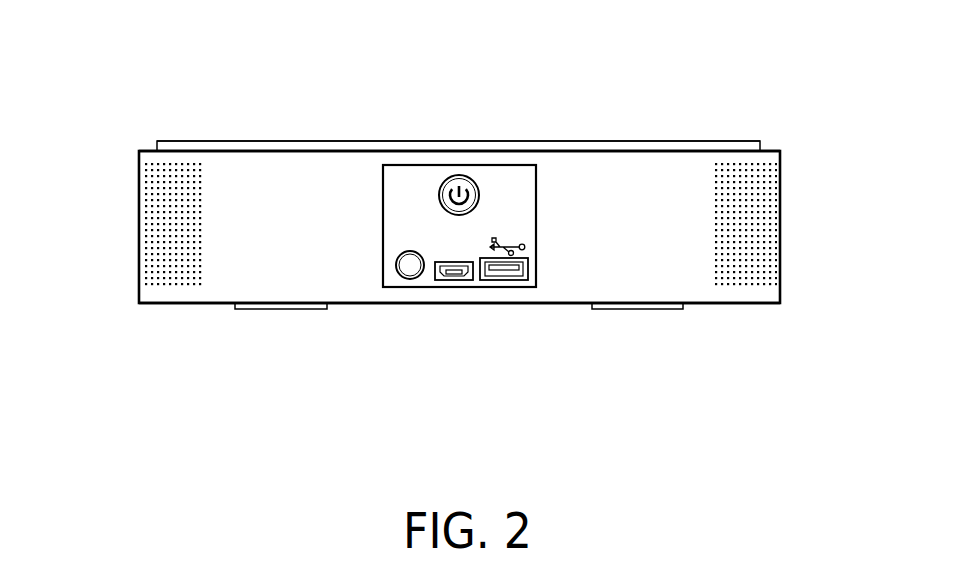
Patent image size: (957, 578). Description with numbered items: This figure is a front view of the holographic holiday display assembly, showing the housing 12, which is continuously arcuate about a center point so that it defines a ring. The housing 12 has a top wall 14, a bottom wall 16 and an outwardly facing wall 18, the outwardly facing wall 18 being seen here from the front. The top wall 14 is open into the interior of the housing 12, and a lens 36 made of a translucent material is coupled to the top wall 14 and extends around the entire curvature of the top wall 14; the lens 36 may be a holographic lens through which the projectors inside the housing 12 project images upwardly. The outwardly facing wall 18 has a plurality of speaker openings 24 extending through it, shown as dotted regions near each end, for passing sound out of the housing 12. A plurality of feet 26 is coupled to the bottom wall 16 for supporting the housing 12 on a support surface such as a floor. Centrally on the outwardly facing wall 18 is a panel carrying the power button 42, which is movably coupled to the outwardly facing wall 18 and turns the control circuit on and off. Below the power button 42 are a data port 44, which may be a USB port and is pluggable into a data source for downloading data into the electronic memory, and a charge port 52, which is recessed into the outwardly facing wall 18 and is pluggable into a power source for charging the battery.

The housing 12 is at (780, 151).
The top wall 14 is at (224, 151).
The bottom wall 16 is at (213, 305).
The outwardly facing wall 18 is at (321, 160).
The speaker openings 24 is at (163, 242).
The feet 26 is at (282, 309).
The lens 36 is at (691, 141).
The power button 42 is at (463, 182).
The data port 44 is at (504, 282).
The charge port 52 is at (455, 282).